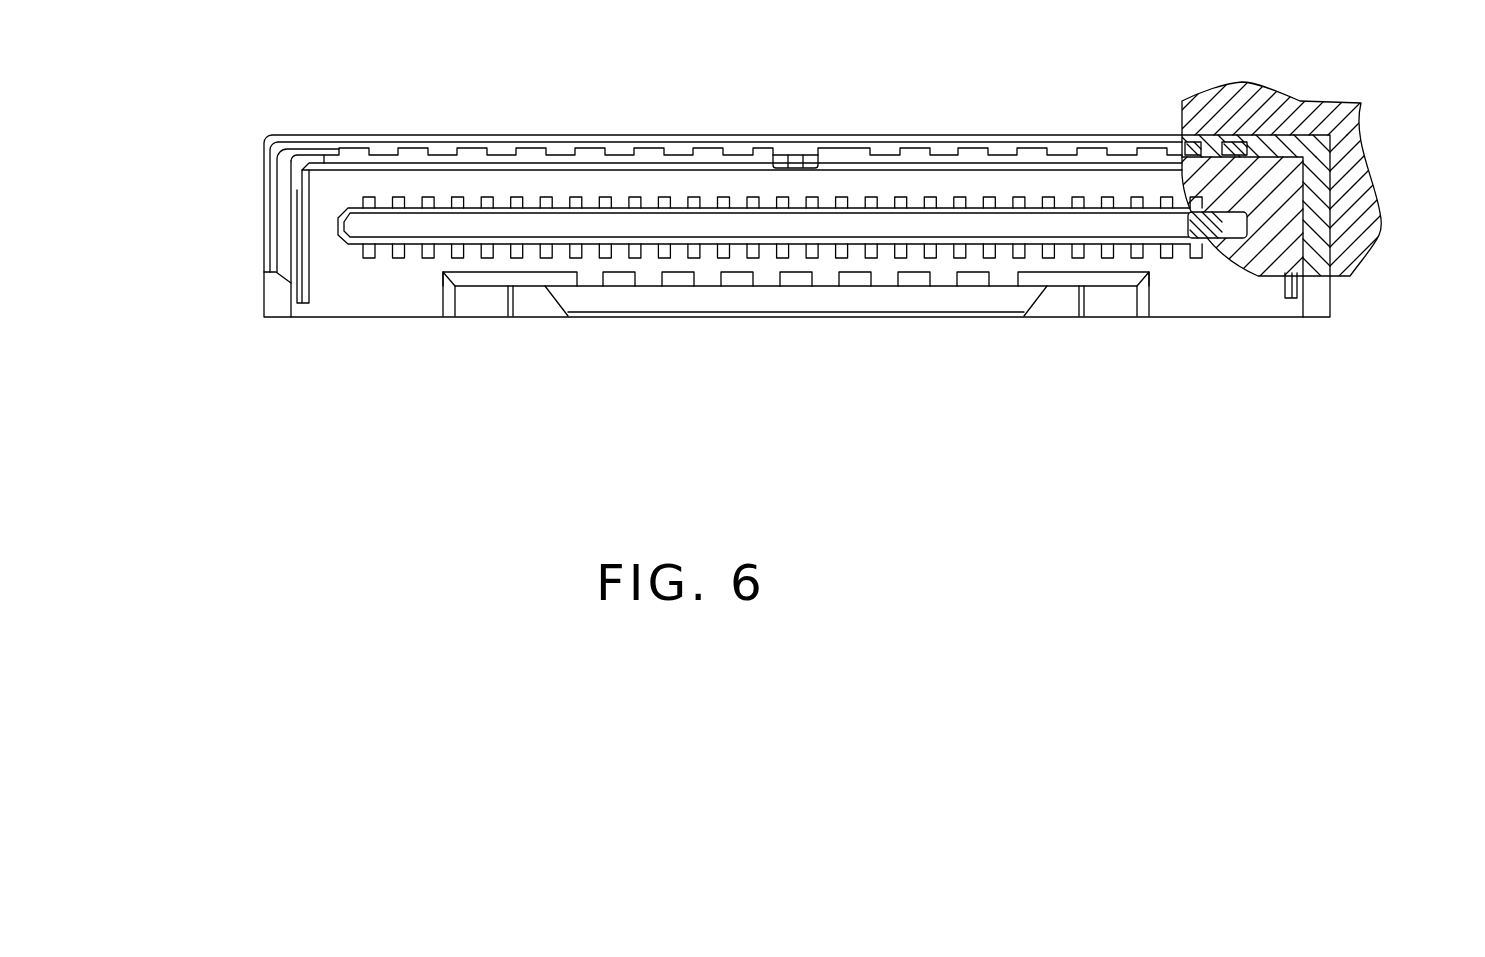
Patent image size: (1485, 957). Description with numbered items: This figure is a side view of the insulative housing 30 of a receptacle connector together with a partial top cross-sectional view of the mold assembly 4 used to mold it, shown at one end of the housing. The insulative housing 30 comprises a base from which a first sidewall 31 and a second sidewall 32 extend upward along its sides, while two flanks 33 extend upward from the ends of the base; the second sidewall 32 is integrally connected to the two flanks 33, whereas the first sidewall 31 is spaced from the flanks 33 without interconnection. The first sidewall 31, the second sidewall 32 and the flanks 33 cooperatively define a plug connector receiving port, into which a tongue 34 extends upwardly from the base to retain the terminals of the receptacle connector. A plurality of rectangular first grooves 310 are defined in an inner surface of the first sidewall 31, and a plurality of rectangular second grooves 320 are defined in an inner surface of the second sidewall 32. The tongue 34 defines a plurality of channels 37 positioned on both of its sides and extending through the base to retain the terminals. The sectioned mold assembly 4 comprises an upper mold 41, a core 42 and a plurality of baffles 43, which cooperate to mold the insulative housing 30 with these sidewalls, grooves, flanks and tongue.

The insulative housing 30 is at (873, 126).
The first sidewall 31 is at (848, 296).
The first grooves 310 is at (704, 283).
The second sidewall 32 is at (762, 147).
The second grooves 320 is at (529, 158).
The flanks 33 is at (285, 232).
The tongue 34 is at (543, 223).
The channels 37 is at (426, 203).
The mold assembly 4 is at (1392, 150).
The upper mold 41 is at (1328, 125).
The core 42 is at (1262, 222).
The baffles 43 is at (1240, 150).